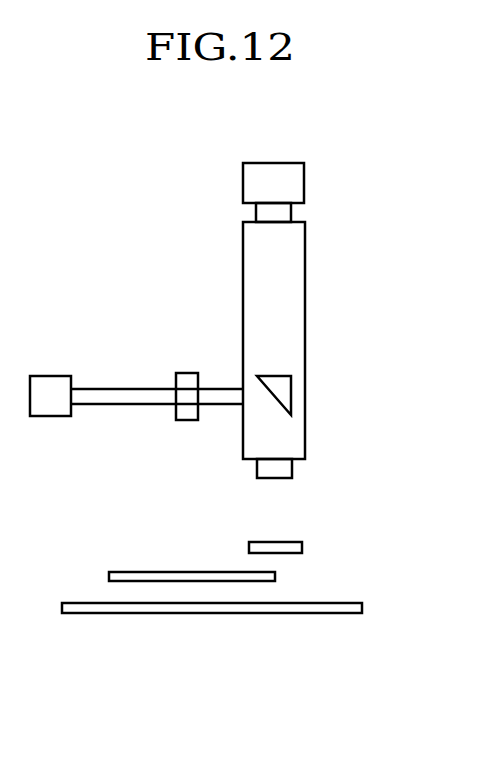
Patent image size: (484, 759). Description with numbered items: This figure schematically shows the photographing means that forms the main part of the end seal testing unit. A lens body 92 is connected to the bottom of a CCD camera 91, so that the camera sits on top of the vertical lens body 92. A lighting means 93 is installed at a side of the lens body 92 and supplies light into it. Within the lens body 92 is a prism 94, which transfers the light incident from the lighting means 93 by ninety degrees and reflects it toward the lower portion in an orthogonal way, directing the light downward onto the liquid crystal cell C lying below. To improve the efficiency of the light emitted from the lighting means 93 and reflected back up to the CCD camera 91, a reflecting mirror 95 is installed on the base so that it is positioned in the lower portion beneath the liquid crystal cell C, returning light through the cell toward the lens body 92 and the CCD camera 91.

The CCD camera 91 is at (295, 183).
The lens body 92 is at (295, 338).
The lighting means 93 is at (47, 390).
The prism 94 is at (283, 390).
The reflecting mirror 95 is at (345, 603).
The liquid crystal cell C is at (130, 572).